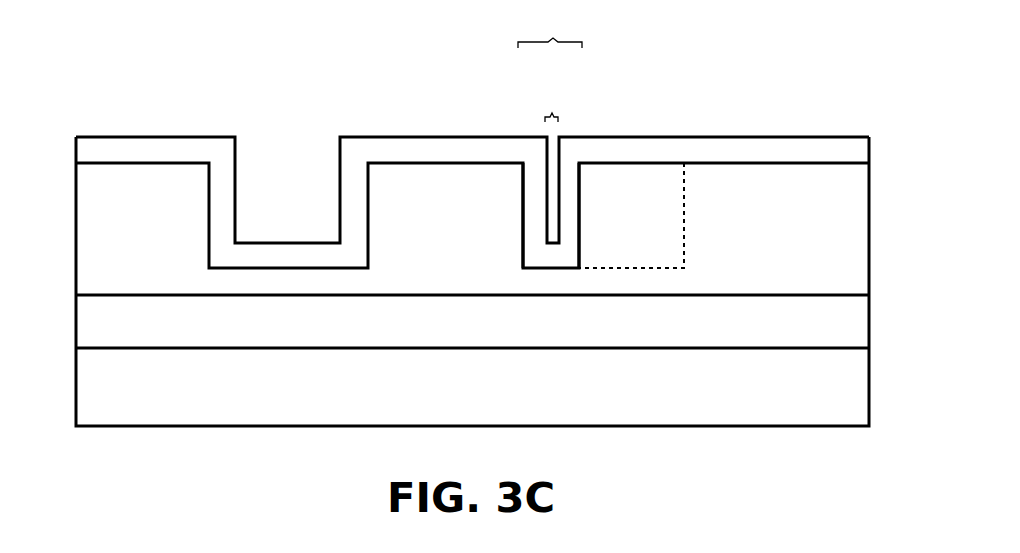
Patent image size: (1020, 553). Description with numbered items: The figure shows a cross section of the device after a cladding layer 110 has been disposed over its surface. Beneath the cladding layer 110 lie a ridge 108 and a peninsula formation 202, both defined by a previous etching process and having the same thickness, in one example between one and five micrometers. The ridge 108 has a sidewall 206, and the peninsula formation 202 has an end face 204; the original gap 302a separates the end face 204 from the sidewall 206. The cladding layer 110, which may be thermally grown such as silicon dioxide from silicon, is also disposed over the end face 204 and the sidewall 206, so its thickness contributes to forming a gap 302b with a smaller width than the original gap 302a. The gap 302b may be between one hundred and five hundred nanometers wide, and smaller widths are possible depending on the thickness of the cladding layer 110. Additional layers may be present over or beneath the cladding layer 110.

The cladding layer 110 is at (87, 147).
The ridge 108 is at (467, 228).
The peninsula formation 202 is at (647, 228).
The end face 204 is at (580, 207).
The sidewall 206 is at (523, 217).
The gap 302a is at (553, 24).
The gap 302b is at (556, 100).